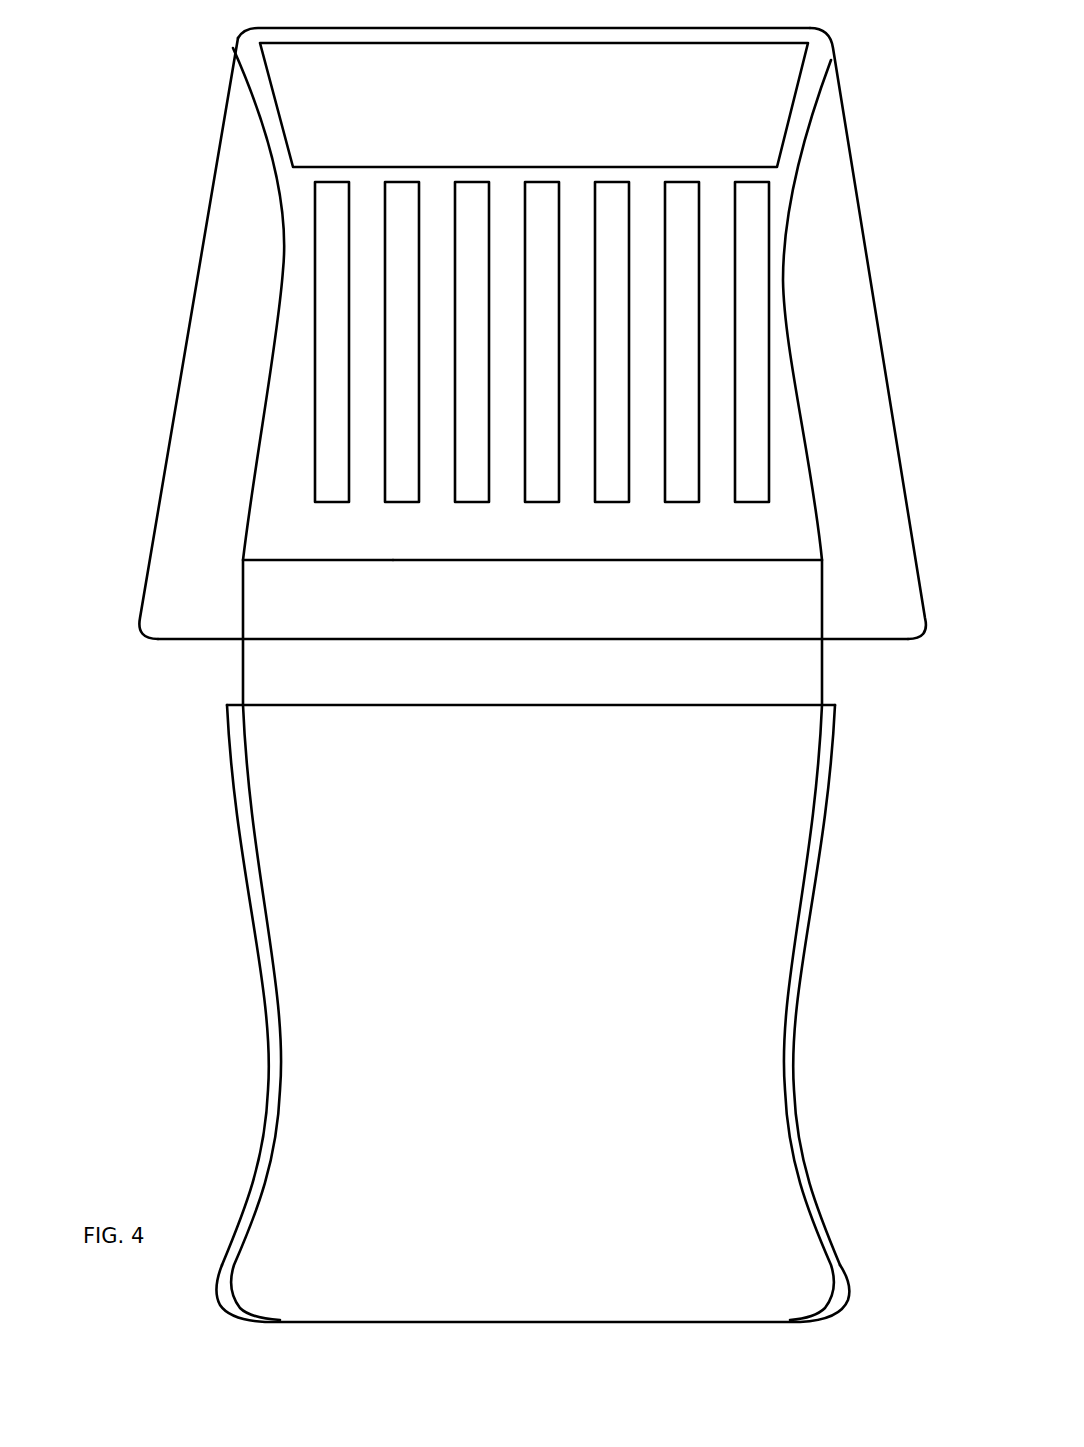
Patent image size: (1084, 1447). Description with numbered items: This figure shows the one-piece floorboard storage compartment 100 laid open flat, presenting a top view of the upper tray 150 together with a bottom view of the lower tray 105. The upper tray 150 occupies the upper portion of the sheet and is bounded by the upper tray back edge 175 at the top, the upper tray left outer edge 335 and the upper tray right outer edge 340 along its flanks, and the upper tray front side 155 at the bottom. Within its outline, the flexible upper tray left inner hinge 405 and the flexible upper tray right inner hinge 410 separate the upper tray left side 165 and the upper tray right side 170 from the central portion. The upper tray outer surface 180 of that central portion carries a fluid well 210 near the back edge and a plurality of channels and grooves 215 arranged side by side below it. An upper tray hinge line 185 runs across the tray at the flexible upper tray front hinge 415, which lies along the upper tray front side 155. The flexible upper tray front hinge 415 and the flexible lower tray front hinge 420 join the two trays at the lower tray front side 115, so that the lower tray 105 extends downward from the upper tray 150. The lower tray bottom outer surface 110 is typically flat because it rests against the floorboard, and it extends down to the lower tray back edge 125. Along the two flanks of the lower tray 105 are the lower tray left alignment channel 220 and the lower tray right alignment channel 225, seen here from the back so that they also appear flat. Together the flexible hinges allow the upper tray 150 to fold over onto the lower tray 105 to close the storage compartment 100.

The one-piece floorboard storage compartment 100 is at (92, 82).
The lower tray 105 is at (275, 958).
The lower tray bottom outer surface 110 is at (516, 1005).
The lower tray front side 115 is at (532, 672).
The lower tray back edge 125 is at (523, 1317).
The upper tray 150 is at (297, 308).
The upper tray front side 155 is at (532, 586).
The upper tray left side 165 is at (865, 349).
The upper tray right side 170 is at (195, 343).
The upper tray back edge 175 is at (278, 28).
The upper tray outer surface 180 is at (542, 363).
The upper tray hinge line 185 is at (393, 562).
The fluid well 210 is at (534, 105).
The plurality of channels and grooves 215 is at (542, 342).
The lower tray left alignment channel 220 is at (235, 810).
The lower tray right alignment channel 225 is at (823, 822).
The upper tray left outer edge 335 is at (858, 248).
The upper tray right outer edge 340 is at (205, 260).
The flexible upper tray left inner hinge 405 is at (788, 340).
The flexible upper tray right inner hinge 410 is at (268, 363).
The flexible upper tray front hinge 415 is at (257, 640).
The flexible lower tray front hinge 420 is at (257, 703).